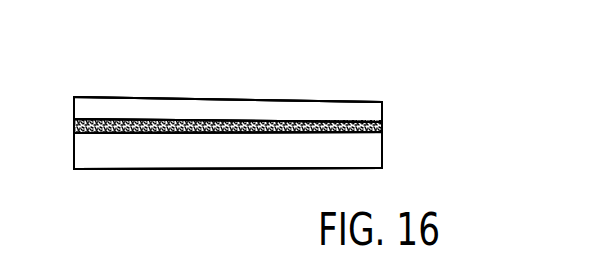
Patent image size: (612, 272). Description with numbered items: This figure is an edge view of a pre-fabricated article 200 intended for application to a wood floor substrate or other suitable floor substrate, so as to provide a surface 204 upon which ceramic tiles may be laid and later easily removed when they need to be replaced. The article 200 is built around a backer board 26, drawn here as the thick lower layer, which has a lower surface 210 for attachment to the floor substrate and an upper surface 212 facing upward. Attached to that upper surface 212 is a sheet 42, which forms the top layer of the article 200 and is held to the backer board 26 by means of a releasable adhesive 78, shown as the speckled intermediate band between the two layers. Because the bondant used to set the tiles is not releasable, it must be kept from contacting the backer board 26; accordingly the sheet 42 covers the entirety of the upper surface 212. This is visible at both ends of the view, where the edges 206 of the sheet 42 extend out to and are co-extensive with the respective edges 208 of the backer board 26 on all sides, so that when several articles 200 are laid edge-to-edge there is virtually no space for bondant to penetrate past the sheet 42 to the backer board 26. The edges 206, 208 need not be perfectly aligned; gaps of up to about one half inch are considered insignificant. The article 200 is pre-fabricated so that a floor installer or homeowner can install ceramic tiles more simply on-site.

The pre-fabricated article 200 is at (410, 109).
The surface 204 is at (142, 100).
The sheet 42 is at (258, 107).
The upper surface 212 is at (220, 127).
The releasable adhesive 78 is at (383, 128).
The backer board 26 is at (383, 152).
The lower surface 210 is at (203, 170).
The edges of the sheet 206 is at (73, 110).
The edges of the backer board 208 is at (74, 150).